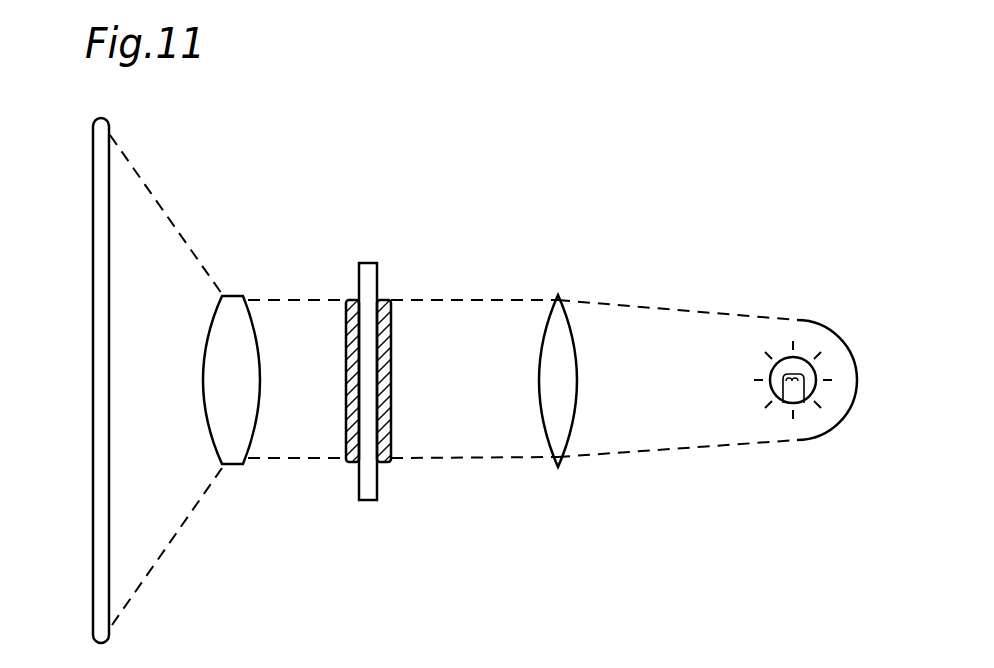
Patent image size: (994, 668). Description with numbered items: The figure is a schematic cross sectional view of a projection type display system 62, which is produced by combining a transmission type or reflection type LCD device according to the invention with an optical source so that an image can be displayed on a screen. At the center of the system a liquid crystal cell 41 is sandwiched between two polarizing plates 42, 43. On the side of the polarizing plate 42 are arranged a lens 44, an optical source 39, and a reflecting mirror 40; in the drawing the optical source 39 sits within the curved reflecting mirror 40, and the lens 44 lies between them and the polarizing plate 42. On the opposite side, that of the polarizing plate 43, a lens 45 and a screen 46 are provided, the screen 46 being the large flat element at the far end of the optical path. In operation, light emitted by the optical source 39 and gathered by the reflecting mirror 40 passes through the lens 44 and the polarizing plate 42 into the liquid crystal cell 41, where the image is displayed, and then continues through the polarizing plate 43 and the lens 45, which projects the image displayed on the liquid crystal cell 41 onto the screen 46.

The optical source 39 is at (800, 358).
The reflecting mirror 40 is at (848, 412).
The liquid crystal cell 41 is at (371, 262).
The polarizing plate 42 is at (388, 300).
The polarizing plate 43 is at (349, 300).
The lens 44 is at (558, 295).
The lens 45 is at (237, 296).
The screen 46 is at (93, 368).
The projection type display system 62 is at (657, 183).